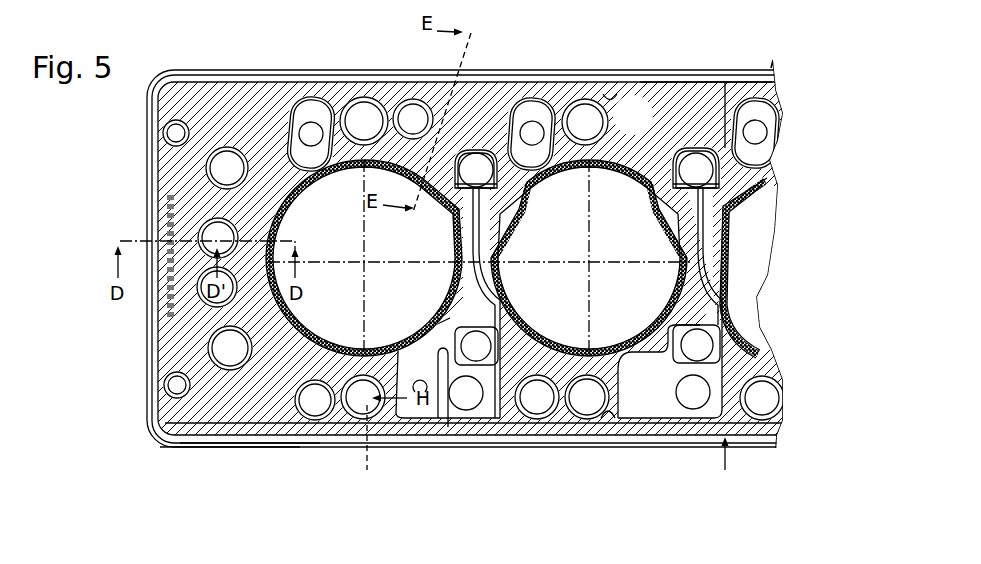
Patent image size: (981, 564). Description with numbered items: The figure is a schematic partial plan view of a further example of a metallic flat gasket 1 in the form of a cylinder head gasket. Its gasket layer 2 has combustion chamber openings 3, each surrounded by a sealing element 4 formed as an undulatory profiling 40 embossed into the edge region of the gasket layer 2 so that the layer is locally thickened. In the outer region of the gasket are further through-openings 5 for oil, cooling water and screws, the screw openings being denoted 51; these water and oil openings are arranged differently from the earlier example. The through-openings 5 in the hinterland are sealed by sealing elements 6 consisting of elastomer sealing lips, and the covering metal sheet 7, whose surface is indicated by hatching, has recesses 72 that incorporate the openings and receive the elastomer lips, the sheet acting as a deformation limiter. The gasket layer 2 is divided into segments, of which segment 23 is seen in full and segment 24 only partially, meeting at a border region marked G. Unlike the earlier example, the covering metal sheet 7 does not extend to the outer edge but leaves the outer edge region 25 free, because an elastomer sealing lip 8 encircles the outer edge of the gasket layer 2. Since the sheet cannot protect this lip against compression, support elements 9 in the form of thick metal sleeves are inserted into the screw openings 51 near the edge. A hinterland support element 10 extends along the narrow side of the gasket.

The metallic flat gasket 1 is at (236, 62).
The gasket layer 2 is at (154, 338).
The combustion chamber opening 3 is at (515, 258).
The sealing element 4 is at (321, 192).
The further through-opening 5 is at (409, 116).
The sealing element 6 is at (311, 112).
The covering metal sheet 7 is at (769, 72).
The sealing lip 8 is at (183, 448).
The support element 9 is at (357, 406).
The hinterland support element 10 is at (172, 207).
The segment 23 is at (696, 98).
The segment 24 is at (747, 98).
The outer edge region 25 is at (230, 444).
The undulatory profiling 40 is at (503, 207).
The screw opening 51 is at (358, 118).
The recess 72 is at (611, 98).